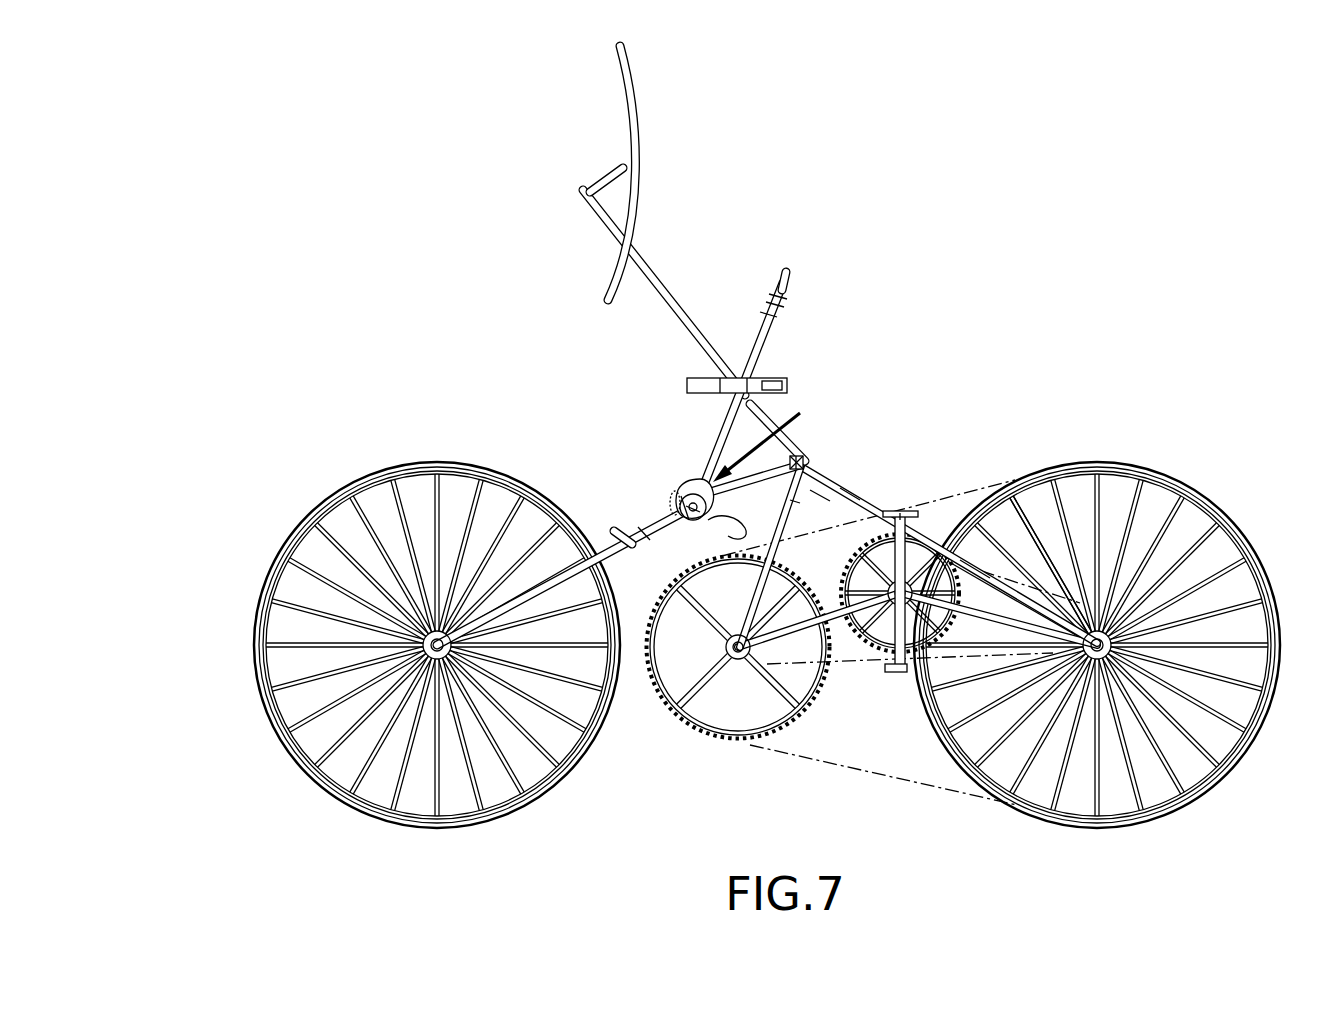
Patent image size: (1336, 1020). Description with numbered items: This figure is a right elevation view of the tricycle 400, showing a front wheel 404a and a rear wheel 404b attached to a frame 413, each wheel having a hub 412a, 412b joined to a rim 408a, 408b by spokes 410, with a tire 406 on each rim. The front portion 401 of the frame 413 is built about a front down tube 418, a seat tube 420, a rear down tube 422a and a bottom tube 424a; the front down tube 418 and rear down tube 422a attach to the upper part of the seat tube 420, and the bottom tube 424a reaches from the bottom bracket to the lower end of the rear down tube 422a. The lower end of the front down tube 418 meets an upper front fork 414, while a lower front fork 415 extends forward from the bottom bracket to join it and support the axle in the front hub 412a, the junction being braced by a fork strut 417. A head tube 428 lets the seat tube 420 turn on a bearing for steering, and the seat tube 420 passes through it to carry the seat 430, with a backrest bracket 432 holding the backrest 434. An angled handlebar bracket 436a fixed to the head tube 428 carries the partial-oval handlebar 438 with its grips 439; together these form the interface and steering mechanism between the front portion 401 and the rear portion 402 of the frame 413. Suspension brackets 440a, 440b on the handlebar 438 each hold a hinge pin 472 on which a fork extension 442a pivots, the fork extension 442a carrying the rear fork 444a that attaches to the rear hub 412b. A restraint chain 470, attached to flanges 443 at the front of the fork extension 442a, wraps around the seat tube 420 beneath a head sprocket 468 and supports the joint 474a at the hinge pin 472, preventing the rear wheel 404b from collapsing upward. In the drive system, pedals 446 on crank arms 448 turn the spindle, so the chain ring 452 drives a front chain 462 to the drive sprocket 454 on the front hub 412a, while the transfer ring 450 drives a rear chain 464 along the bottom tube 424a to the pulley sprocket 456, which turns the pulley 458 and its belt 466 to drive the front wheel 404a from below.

The tricycle 400 is at (1199, 314).
The front portion of the frame 401 is at (1258, 462).
The rear portion of the frame 402 is at (246, 355).
The front wheel 404a is at (1120, 823).
The rear wheel 404b is at (490, 820).
The tire 406 is at (593, 748).
The front rim 408a is at (1158, 810).
The rear rim 408b is at (323, 780).
The spokes 410 is at (290, 687).
The front hub 412a is at (1107, 653).
The rear hub 412b is at (425, 657).
The frame 413 is at (877, 490).
The upper front fork 414 is at (1013, 590).
The lower front fork 415 is at (1045, 612).
The fork strut 417 is at (917, 560).
The front down tube 418 is at (852, 483).
The seat tube 420 is at (833, 502).
The rear down tube 422a is at (723, 633).
The bottom tube 424a is at (793, 630).
The head tube 428 is at (795, 457).
The seat 430 is at (787, 382).
The backrest bracket 432 is at (650, 263).
The backrest 434 is at (632, 83).
The handlebar bracket 436a is at (722, 378).
The handlebar 438 is at (712, 463).
The grips 439 is at (793, 263).
The suspension bracket 440a is at (683, 490).
The suspension bracket 440b is at (685, 487).
The fork extension 442a is at (637, 527).
The flange 443 is at (703, 520).
The rear fork 444a is at (570, 661).
The pedals 446 is at (900, 510).
The crank arms 448 is at (865, 612).
The transfer ring 450 is at (900, 606).
The chain ring 452 is at (880, 553).
The drive sprocket 454 is at (1130, 583).
The pulley sprocket 456 is at (735, 668).
The pulley 458 is at (756, 692).
The front chain 462 is at (983, 560).
The rear chain 464 is at (860, 668).
The belt 466 is at (973, 490).
The head sprocket 468 is at (797, 465).
The restraint chain 470 is at (727, 520).
The hinge pin 472 is at (685, 503).
The joint 474a is at (768, 437).